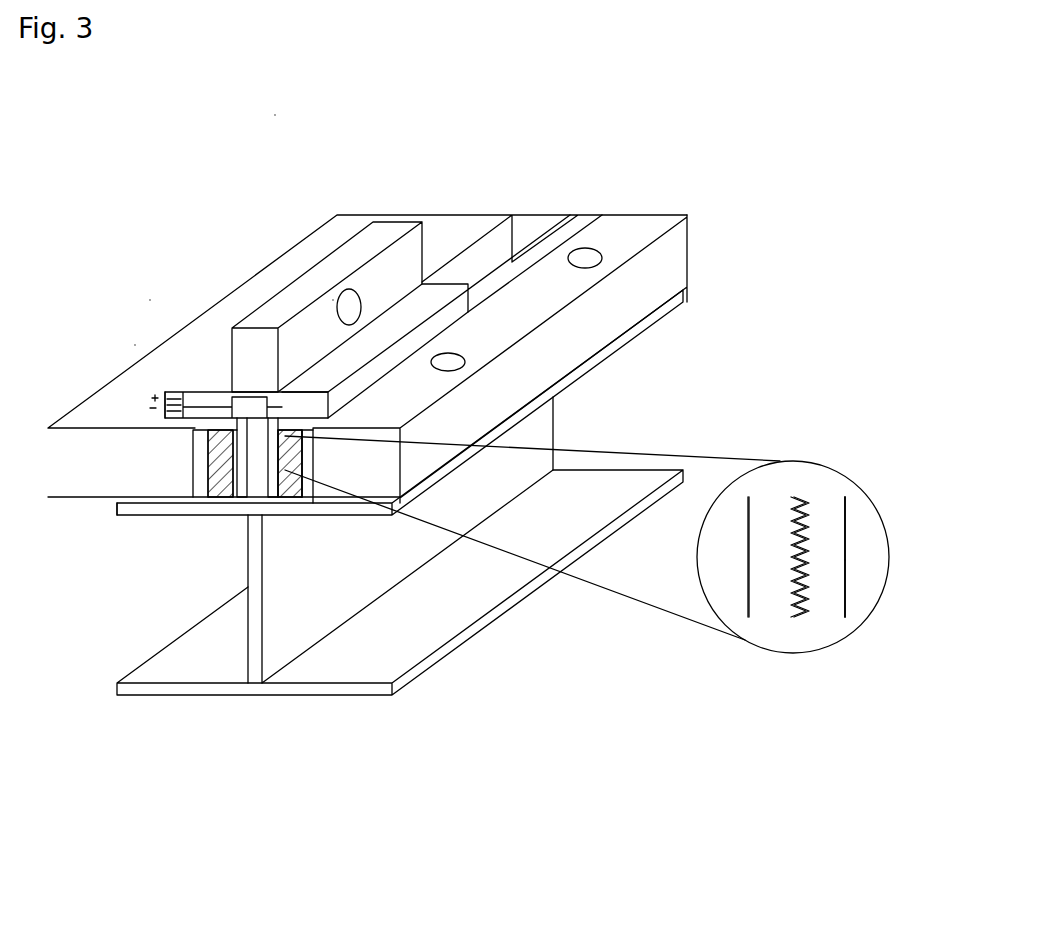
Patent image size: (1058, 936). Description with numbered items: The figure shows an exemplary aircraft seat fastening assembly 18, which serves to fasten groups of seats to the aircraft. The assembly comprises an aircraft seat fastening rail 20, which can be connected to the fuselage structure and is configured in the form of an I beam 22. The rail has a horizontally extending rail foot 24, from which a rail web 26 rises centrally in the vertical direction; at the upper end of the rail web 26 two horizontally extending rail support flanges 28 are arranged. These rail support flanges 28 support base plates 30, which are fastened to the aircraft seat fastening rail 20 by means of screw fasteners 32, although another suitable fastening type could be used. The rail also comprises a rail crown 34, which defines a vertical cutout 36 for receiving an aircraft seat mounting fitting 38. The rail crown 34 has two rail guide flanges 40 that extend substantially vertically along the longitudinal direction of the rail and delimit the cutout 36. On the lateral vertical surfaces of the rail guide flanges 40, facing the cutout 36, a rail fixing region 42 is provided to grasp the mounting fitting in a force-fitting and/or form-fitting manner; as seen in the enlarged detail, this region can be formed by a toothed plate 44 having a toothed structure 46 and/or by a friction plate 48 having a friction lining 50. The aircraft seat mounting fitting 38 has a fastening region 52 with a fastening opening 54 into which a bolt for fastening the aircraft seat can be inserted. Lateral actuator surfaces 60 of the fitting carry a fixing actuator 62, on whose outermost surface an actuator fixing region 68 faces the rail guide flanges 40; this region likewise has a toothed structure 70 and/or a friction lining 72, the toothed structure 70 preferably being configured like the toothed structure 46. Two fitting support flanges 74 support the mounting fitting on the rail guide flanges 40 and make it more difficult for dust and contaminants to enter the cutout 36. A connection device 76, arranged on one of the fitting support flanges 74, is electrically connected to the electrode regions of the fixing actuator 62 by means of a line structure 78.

The aircraft seat fastening assembly 18 is at (275, 117).
The aircraft seat fastening rail 20 is at (377, 541).
The I beam 22 is at (278, 687).
The rail foot 24 is at (375, 688).
The rail web 26 is at (252, 552).
The rail support flanges 28 is at (145, 507).
The base plates 30 is at (97, 417).
The screw fasteners 32 is at (585, 258).
The rail crown 34 is at (489, 327).
The cutout 36 is at (528, 218).
The aircraft seat mounting fitting 38 is at (360, 253).
The rail guide flanges 40 is at (303, 504).
The rail fixing region 42 is at (300, 500).
The toothed plate 44 is at (830, 587).
The toothed structure 46 is at (802, 613).
The friction plate 48 is at (823, 513).
The friction lining 50 is at (823, 513).
The fastening region 52 is at (336, 302).
The fastening opening 54 is at (349, 307).
The lateral actuator surfaces 60 is at (285, 410).
The fixing actuator 62 is at (235, 456).
The actuator fixing region 68 is at (604, 551).
The toothed structure 70 is at (790, 533).
The friction lining 72 is at (790, 585).
The fitting support flanges 74 is at (158, 287).
The connection device 76 is at (135, 335).
The line structure 78 is at (197, 410).